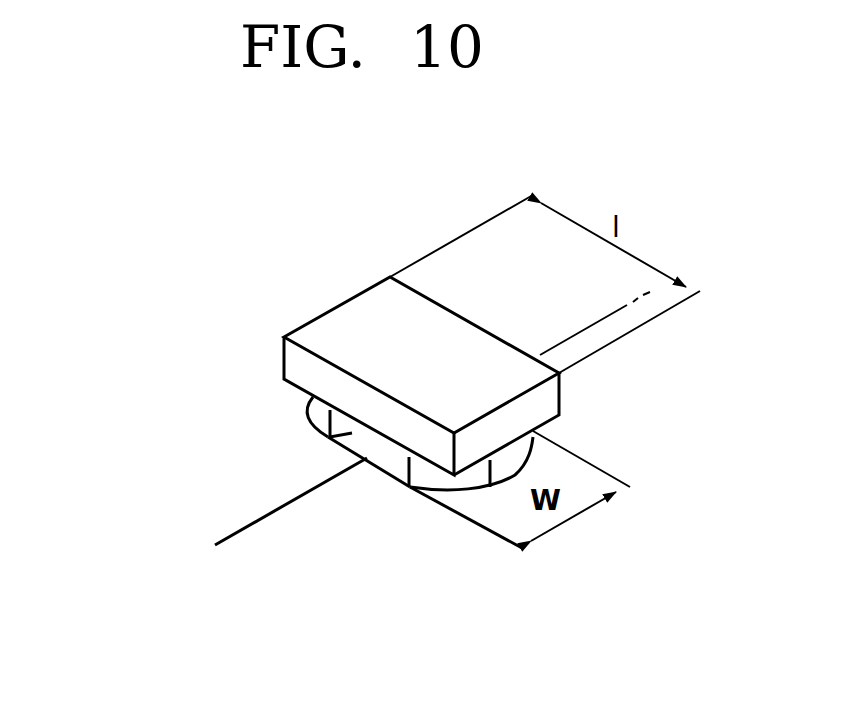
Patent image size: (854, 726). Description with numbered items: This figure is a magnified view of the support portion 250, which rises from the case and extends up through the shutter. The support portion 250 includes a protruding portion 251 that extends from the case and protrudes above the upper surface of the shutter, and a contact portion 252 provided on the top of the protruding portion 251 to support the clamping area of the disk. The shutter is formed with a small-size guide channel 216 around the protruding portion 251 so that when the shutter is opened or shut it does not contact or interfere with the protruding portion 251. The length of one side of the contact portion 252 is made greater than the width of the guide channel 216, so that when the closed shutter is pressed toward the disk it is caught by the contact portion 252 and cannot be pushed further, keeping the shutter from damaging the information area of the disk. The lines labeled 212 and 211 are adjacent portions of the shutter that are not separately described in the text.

The support portion 250 is at (232, 263).
The contact portion 252 is at (370, 323).
The protruding portion 251 is at (330, 437).
The guide channel 216 is at (313, 413).
The wiring line 212 is at (218, 390).
The wiring line 211 is at (372, 538).